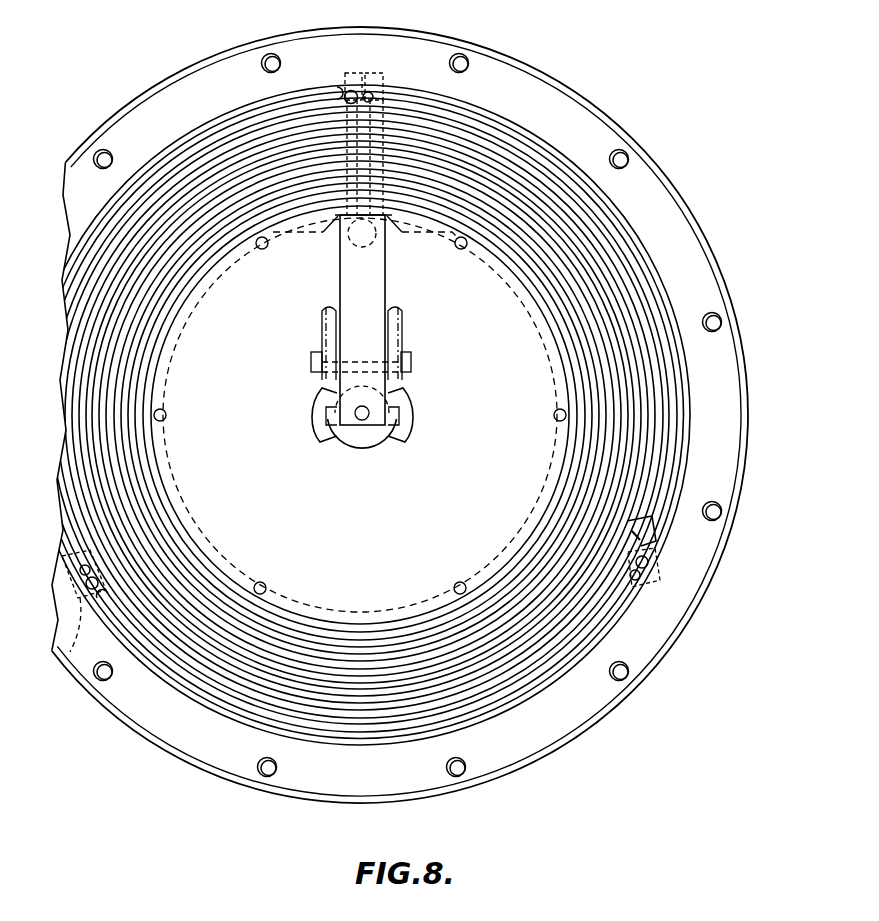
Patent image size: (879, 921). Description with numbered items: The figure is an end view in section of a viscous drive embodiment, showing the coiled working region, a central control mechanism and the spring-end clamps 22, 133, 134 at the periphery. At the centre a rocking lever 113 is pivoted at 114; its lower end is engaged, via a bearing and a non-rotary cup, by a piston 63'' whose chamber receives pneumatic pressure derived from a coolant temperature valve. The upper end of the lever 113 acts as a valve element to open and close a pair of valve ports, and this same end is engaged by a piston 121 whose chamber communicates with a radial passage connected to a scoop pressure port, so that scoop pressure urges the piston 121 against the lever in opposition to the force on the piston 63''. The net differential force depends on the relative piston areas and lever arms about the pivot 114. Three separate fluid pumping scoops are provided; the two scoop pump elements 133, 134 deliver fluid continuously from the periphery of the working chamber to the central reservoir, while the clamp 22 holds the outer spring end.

The outer spring end clamp 22 is at (366, 73).
The piston 121 is at (376, 241).
The rocking lever 113 is at (373, 328).
The pivot 114 is at (412, 359).
The piston 63'' is at (362, 440).
The scoop pump element 133 is at (650, 587).
The scoop pump element 134 is at (70, 652).